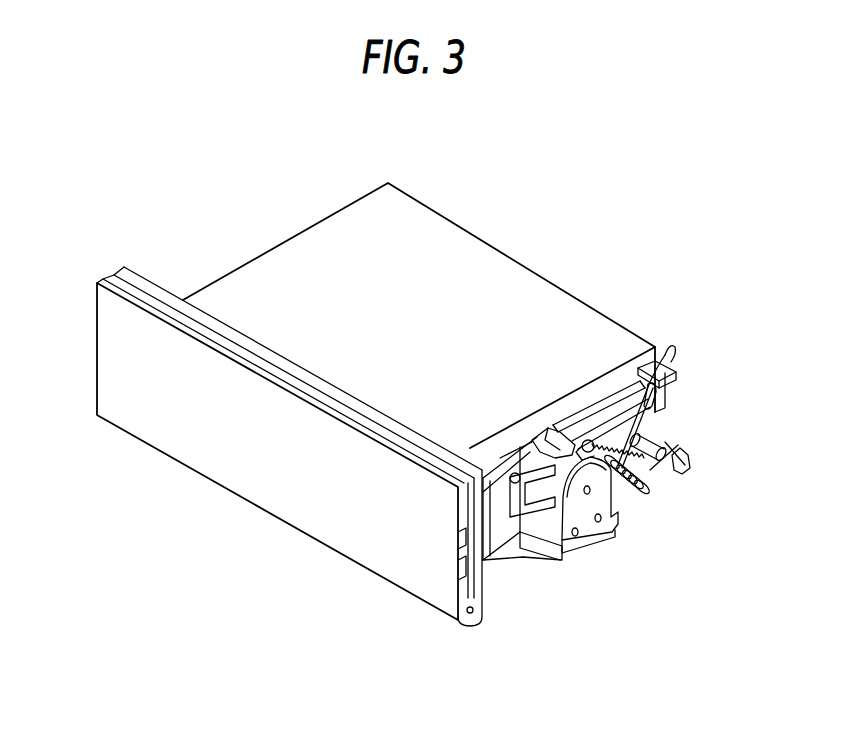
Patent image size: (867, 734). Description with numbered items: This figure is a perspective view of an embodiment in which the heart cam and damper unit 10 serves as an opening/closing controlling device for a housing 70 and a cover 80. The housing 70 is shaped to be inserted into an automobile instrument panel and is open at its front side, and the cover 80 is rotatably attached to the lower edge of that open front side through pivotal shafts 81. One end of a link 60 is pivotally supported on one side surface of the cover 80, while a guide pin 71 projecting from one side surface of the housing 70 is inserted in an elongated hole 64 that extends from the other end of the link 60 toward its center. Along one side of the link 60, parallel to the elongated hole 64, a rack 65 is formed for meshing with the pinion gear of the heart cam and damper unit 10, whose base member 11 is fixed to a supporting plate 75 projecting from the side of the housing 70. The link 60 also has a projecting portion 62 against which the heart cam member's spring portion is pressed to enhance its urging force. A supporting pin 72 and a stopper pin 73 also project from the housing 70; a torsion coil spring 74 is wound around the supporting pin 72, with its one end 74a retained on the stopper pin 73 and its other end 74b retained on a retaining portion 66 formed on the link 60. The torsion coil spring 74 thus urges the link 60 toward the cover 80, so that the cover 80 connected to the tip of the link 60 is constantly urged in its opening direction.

The heart cam and damper unit 10 is at (575, 556).
The base member 11 is at (588, 522).
The link 60 is at (500, 462).
The projecting portion 62 is at (555, 440).
The elongated hole 64 is at (614, 408).
The rack 65 is at (658, 426).
The retaining portion 66 is at (678, 376).
The housing 70 is at (405, 216).
The guide pin 71 is at (586, 436).
The supporting pin 72 is at (640, 492).
The stopper pin 73 is at (690, 472).
The torsion coil spring 74 is at (628, 500).
The one end of the torsion coil spring 74a is at (672, 480).
The another end of the torsion coil spring 74b is at (669, 350).
The supporting plate 75 is at (540, 552).
The cover 80 is at (265, 495).
The pivotal shaft 81 is at (472, 626).